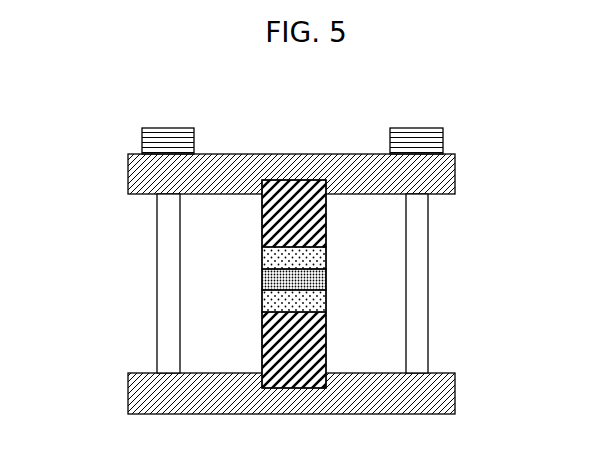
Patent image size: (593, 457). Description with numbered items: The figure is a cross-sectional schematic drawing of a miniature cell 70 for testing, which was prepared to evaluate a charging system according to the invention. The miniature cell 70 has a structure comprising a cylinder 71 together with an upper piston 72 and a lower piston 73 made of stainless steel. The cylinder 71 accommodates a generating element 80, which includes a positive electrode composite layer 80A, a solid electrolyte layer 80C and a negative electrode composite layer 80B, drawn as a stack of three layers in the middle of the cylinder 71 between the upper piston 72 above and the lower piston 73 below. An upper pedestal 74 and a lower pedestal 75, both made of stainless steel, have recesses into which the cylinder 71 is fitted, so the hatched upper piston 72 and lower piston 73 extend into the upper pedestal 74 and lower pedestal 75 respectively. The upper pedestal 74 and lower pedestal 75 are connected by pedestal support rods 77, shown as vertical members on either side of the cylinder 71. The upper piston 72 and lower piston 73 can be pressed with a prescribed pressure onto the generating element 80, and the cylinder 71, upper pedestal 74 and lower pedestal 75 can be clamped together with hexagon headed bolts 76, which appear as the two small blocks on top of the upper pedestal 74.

The miniature cell 70 is at (349, 85).
The cylinder 71 is at (370, 277).
The upper piston 72 is at (326, 215).
The lower piston 73 is at (326, 345).
The upper pedestal 74 is at (455, 174).
The lower pedestal 75 is at (455, 393).
The hexagon headed bolts 76 is at (167, 128).
The pedestal support rods 77 is at (428, 318).
The generating element 80 is at (181, 276).
The positive electrode composite layer 80A is at (262, 303).
The negative electrode composite layer 80B is at (262, 260).
The solid electrolyte layer 80C is at (262, 280).